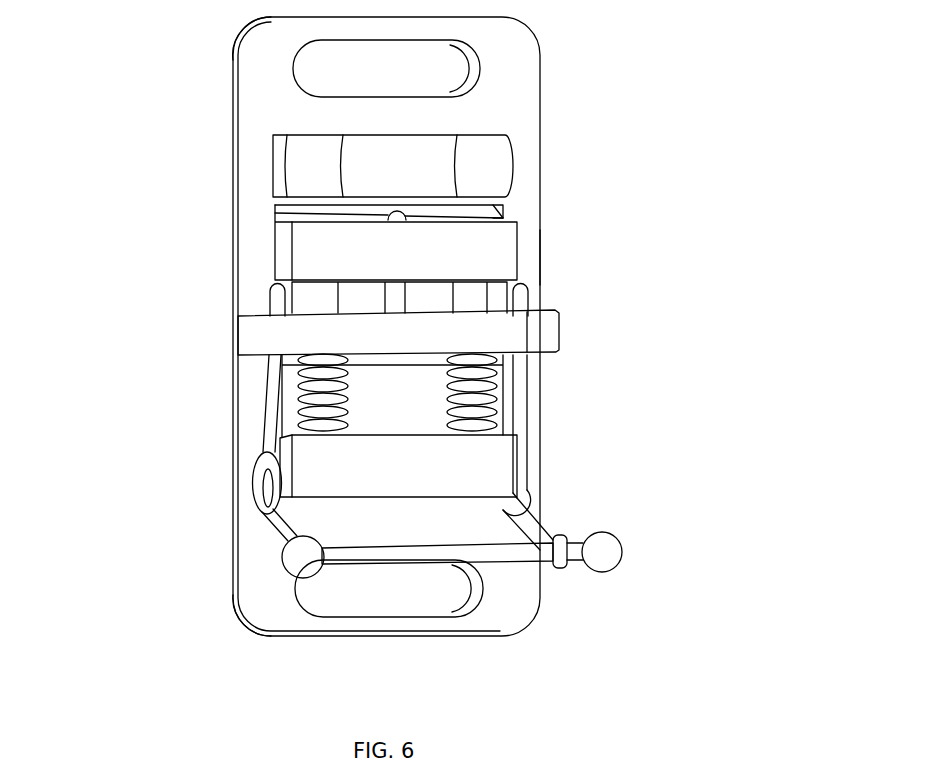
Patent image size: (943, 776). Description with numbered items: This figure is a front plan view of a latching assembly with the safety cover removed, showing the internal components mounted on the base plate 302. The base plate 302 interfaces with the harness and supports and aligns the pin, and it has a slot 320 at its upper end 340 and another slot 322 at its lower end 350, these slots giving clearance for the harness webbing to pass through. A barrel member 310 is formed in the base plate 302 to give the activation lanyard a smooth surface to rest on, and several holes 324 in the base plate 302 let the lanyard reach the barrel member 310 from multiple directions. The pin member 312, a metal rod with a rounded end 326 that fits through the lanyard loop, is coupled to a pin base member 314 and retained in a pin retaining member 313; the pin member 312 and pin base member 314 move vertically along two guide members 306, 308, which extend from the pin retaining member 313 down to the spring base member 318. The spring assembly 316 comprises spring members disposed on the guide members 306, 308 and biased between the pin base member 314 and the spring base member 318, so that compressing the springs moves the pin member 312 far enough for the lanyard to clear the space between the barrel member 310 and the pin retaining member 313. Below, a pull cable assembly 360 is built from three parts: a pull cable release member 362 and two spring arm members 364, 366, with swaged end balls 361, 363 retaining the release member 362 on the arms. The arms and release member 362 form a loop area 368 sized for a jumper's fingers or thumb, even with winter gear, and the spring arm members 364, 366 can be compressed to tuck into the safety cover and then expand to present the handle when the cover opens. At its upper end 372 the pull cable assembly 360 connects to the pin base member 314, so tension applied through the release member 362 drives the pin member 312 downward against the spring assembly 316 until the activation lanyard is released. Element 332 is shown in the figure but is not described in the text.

The base plate 302 is at (240, 107).
The guide member 306 is at (325, 300).
The guide member 308 is at (472, 298).
The barrel member 310 is at (495, 166).
The pin member 312 is at (327, 303).
The pin retaining member 313 is at (315, 256).
The pin base member 314 is at (330, 337).
The spring assembly 316 is at (293, 407).
The spring base member 318 is at (330, 476).
The slot 320 is at (402, 65).
The slot 322 is at (417, 595).
The holes 324 is at (385, 205).
The rounded end 326 is at (386, 220).
The plate corner 332 is at (503, 210).
The upper end 340 is at (237, 45).
The lower end 350 is at (273, 641).
The pull cable assembly 360 is at (687, 523).
The swaged end ball 361 is at (293, 563).
The pull cable release member 362 is at (525, 560).
The swaged end ball 363 is at (607, 558).
The spring arm member 364 is at (525, 523).
The spring arm member 366 is at (283, 530).
The loop area 368 is at (440, 523).
The upper end 372 is at (543, 254).